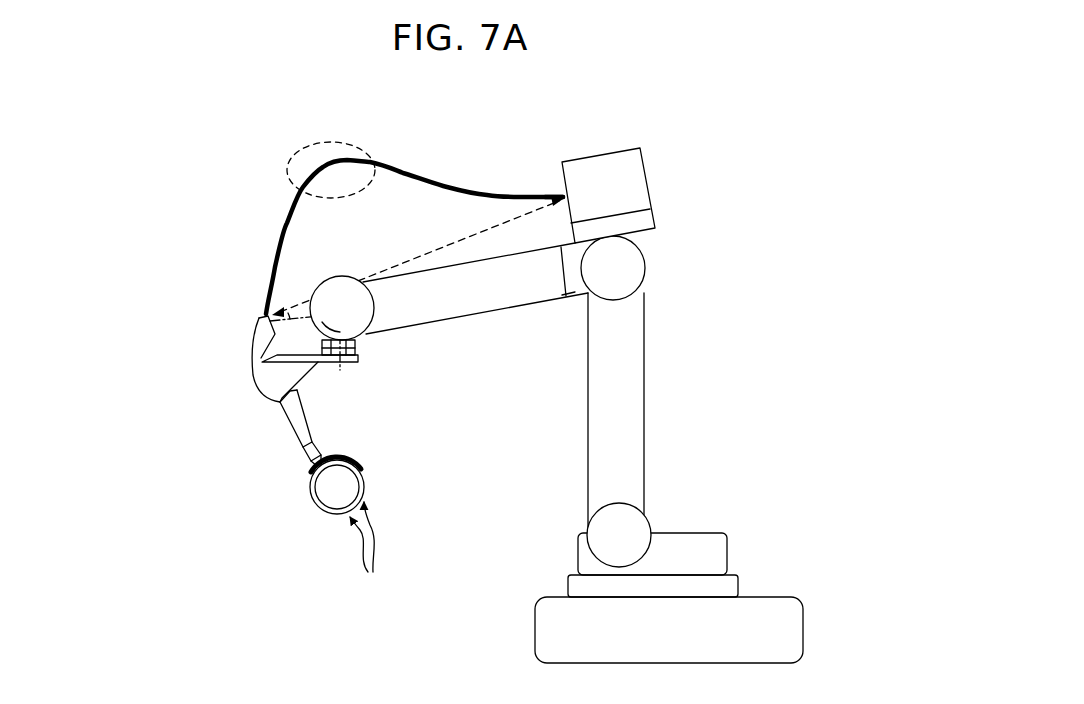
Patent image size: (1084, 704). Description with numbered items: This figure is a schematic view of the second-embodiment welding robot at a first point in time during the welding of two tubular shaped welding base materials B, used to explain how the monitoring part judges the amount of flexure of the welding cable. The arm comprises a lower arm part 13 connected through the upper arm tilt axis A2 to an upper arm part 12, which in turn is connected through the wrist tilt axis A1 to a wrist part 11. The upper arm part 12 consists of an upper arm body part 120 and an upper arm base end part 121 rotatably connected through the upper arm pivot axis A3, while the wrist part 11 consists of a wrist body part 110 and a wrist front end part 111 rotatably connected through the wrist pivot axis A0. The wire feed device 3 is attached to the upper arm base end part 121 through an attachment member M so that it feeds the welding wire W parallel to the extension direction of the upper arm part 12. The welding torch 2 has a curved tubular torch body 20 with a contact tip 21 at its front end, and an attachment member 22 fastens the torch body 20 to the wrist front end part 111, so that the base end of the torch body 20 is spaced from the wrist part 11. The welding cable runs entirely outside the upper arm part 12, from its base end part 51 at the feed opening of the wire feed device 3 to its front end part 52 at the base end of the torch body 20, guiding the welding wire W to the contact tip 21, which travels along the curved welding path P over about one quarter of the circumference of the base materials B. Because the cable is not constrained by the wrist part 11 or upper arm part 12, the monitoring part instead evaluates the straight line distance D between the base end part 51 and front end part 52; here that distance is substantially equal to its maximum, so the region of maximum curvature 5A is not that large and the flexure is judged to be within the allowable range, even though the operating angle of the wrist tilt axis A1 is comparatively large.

The welding torch 2 is at (226, 403).
The wire feed device 3 is at (644, 195).
The part of the welding cable having maximum curvature 5A is at (307, 147).
The wrist part 11 is at (376, 354).
The upper arm part 12 is at (479, 340).
The lower arm part 13 is at (625, 416).
The torch body 20 is at (252, 367).
The contact tip 21 is at (302, 458).
The attachment member 22 is at (277, 412).
The base end part 51 is at (555, 197).
The front end part 52 is at (264, 308).
The wrist body part 110 is at (333, 350).
The wrist front end part 111 is at (347, 352).
The upper arm body part 120 is at (463, 300).
The upper arm base end part 121 is at (577, 287).
The wrist pivot axis A0 is at (316, 345).
The wrist tilt axis A1 is at (362, 313).
The upper arm tilt axis A2 is at (625, 268).
The upper arm pivot axis A3 is at (567, 302).
The welding base materials B is at (365, 552).
The straight line distance D is at (430, 253).
The attachment member M is at (640, 213).
The welding path P is at (352, 455).
The welding wire W is at (313, 467).